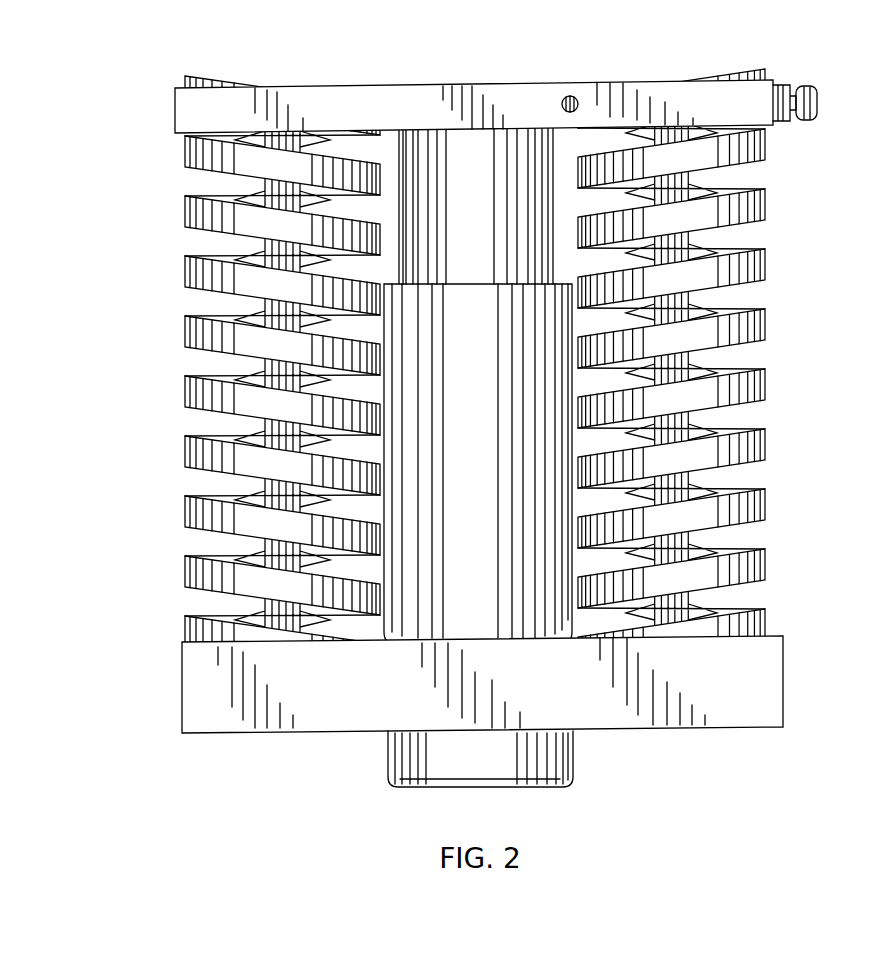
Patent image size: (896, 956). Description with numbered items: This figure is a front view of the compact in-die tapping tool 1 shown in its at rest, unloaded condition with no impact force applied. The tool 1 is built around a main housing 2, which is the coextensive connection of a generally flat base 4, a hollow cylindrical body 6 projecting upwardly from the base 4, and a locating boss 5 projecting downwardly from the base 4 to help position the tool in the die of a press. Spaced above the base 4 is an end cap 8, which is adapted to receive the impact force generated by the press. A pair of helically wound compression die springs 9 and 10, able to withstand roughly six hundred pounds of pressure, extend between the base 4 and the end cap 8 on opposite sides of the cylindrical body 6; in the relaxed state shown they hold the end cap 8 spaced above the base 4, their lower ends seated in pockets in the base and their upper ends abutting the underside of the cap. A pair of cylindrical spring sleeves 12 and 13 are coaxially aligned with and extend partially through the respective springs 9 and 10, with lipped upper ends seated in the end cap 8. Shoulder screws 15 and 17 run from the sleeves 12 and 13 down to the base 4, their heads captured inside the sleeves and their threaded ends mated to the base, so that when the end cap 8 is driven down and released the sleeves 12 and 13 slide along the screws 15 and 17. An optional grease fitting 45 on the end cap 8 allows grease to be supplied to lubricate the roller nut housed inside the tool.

The compact in-die tapping tool 1 is at (502, 408).
The main housing 2 is at (485, 711).
The base 4 is at (192, 688).
The locating boss 5 is at (576, 768).
The hollow cylindrical body 6 is at (463, 494).
The end cap 8 is at (372, 100).
The compression die spring 9 is at (254, 384).
The compression die spring 10 is at (700, 377).
The spring sleeve 12 is at (240, 303).
The spring sleeve 13 is at (690, 244).
The shoulder screw 15 is at (248, 545).
The shoulder screw 17 is at (700, 487).
The grease fitting 45 is at (818, 112).